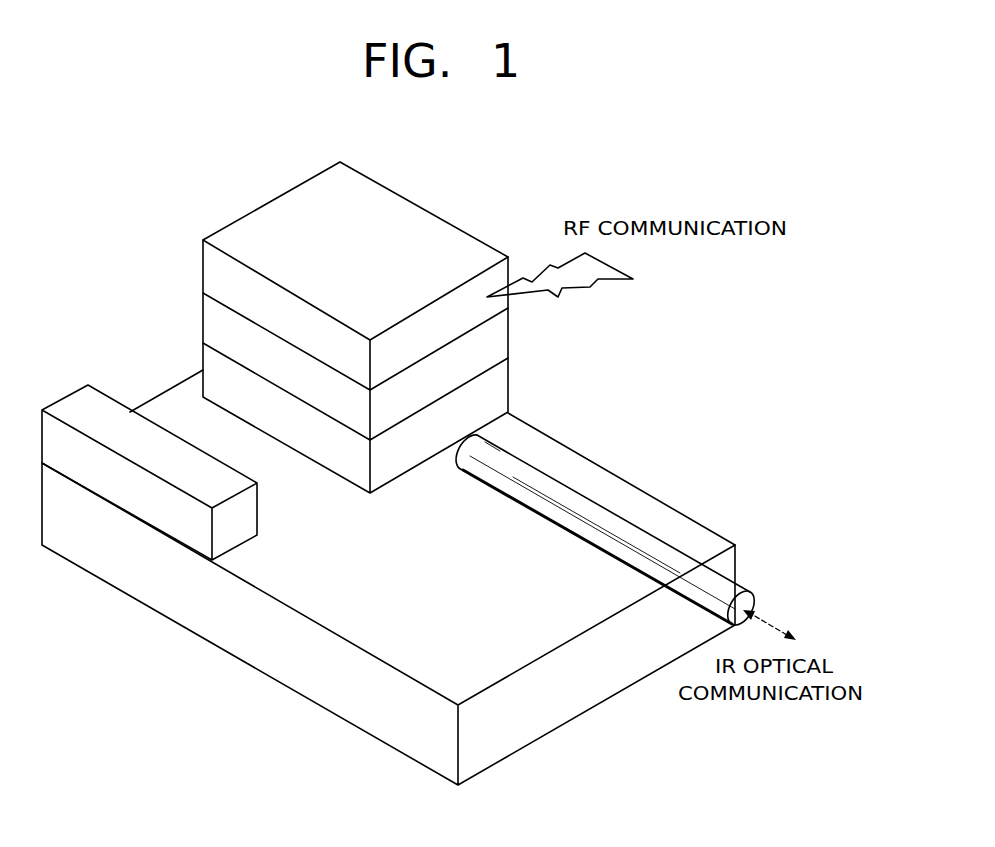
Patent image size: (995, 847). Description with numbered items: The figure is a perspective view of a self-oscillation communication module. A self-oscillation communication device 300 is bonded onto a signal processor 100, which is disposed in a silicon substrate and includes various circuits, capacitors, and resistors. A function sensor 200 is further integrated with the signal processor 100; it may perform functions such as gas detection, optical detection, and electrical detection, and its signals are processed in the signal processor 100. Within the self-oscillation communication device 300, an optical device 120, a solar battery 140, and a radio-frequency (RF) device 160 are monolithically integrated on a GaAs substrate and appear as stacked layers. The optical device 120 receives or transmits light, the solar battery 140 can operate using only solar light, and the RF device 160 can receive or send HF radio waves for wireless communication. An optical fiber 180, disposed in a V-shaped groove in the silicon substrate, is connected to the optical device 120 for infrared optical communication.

The signal processor 100 is at (490, 742).
The optical device 120 is at (203, 359).
The solar battery 140 is at (203, 320).
The radio-frequency (RF) device 160 is at (203, 264).
The optical fiber 180 is at (638, 558).
The function sensor 200 is at (73, 403).
The self-oscillation communication device 300 is at (318, 310).